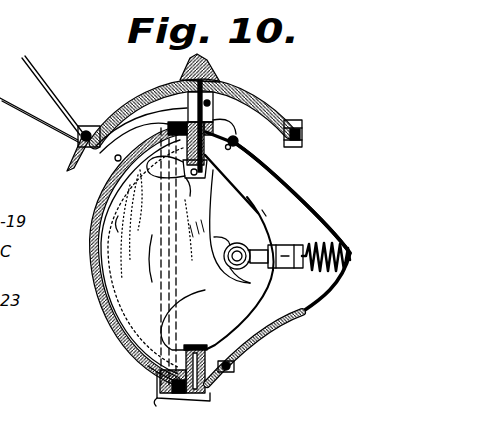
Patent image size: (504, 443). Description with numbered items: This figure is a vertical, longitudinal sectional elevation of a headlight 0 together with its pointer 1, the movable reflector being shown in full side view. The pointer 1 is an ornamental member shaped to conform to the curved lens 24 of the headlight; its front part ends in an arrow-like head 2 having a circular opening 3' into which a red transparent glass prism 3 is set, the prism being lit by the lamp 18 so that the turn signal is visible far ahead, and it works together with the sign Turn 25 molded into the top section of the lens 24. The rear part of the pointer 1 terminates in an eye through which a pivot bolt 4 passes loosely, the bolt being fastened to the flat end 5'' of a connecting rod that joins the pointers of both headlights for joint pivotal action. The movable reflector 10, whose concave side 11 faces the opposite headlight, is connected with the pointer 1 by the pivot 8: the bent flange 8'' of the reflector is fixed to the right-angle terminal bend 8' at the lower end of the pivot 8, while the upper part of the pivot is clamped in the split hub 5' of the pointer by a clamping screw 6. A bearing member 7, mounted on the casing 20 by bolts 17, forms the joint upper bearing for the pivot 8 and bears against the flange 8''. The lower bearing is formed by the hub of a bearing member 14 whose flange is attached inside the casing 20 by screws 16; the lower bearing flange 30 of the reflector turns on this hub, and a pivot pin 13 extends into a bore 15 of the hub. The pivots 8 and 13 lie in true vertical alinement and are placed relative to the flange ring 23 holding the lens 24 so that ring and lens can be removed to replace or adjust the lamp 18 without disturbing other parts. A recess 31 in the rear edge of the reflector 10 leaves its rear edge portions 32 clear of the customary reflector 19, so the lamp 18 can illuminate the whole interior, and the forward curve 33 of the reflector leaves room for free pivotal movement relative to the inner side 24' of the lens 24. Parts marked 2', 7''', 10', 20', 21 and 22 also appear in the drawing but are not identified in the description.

The pointer 1 is at (237, 88).
The arrow-like head 2 is at (61, 154).
The lever arm 2' is at (141, 130).
The transparent glass prism 3 is at (41, 99).
The circular opening 3' is at (91, 116).
The pivot bolt 4 is at (305, 120).
The split hub 5' is at (218, 126).
The flat end of connecting rod 5'' is at (316, 134).
The clamping screw 6 is at (218, 88).
The bearing member 7 is at (237, 137).
The strut pivot 7''' is at (222, 154).
The pivot 8 is at (175, 100).
The right angle terminal bend 8' is at (180, 152).
The bent flange 8'' is at (201, 190).
The movable reflector 10 is at (152, 256).
The bulb envelope 10' is at (163, 225).
The concave side 11 is at (133, 291).
The pivot pin 13 is at (194, 346).
The bearing member 14 is at (215, 350).
The bore 15 is at (196, 390).
The screws 16 is at (238, 363).
The bolts 17 is at (231, 158).
The lamp 18 is at (238, 244).
The customary reflector 19 is at (250, 203).
The casing 20 is at (293, 236).
The lens upper portion 20' is at (298, 197).
The spring 21 is at (351, 255).
The socket 22 is at (308, 243).
The flange ring 23 is at (162, 397).
The curved lens 24 is at (121, 256).
The inner side of lens 24' is at (137, 380).
The sign Turn 25 is at (120, 158).
The lower bearing flange 30 is at (167, 310).
The recess 31 is at (273, 280).
The rear edge portions 32 is at (263, 210).
The forward curve 33 is at (117, 216).
The headlight 0 is at (311, 197).